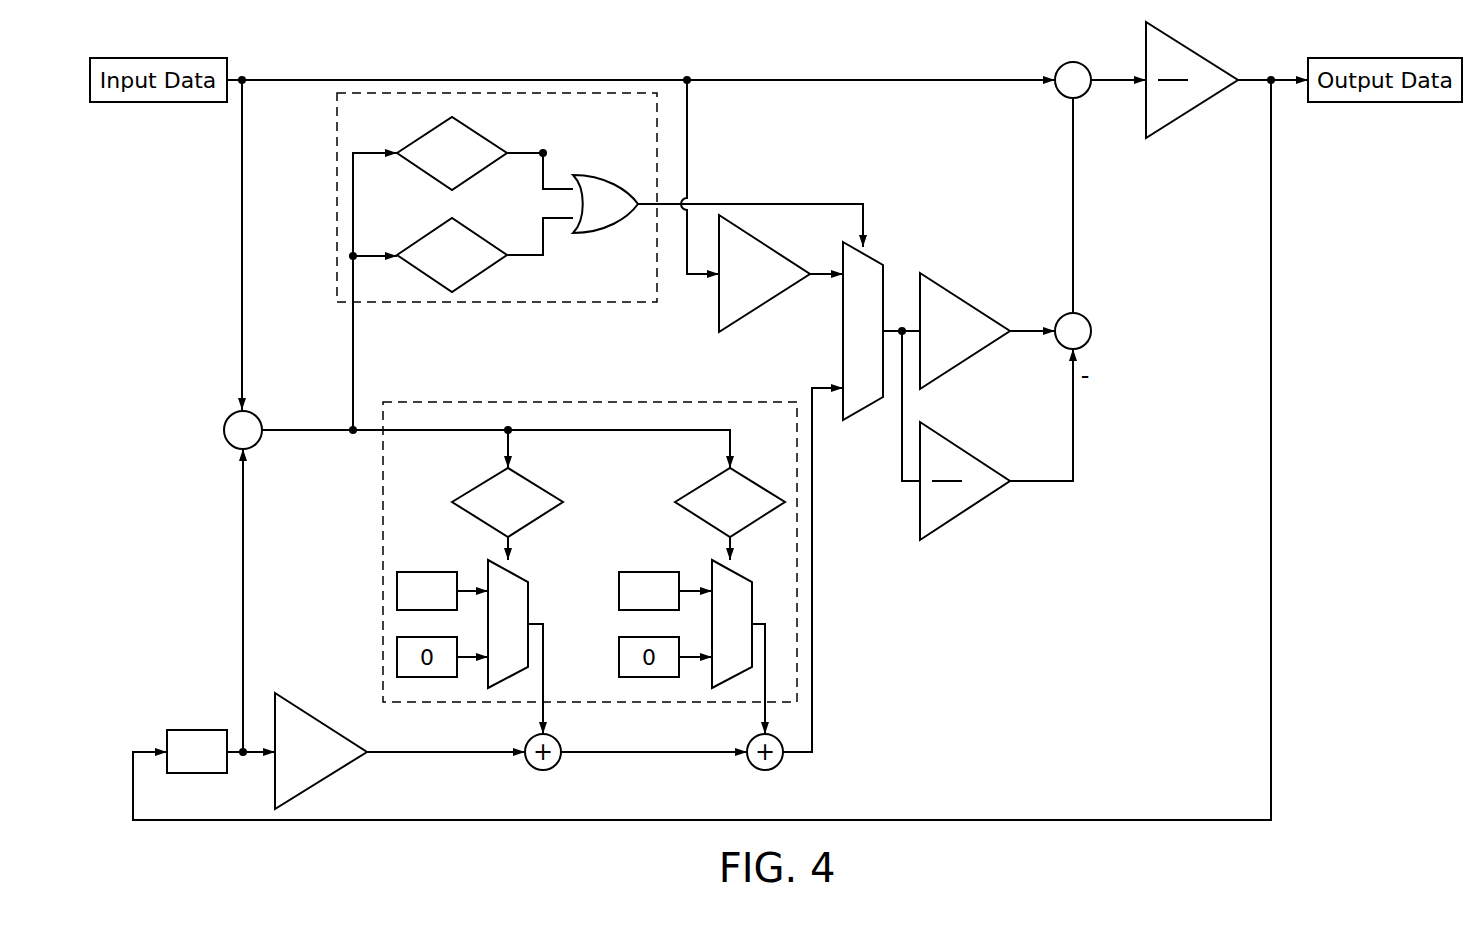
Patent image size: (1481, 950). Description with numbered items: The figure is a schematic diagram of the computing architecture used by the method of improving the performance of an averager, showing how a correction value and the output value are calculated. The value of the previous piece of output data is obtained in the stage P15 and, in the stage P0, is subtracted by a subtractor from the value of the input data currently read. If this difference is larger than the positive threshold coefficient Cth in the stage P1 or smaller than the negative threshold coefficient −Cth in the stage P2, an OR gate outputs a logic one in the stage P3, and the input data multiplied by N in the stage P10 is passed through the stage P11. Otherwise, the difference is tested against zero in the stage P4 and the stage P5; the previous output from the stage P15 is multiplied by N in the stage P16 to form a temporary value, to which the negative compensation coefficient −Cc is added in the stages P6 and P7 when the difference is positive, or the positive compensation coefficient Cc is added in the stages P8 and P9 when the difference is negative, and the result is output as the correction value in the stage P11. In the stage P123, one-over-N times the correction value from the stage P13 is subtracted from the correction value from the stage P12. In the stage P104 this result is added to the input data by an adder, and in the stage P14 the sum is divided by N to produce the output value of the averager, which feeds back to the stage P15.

The stage P0 is at (224, 430).
The stage P1 is at (432, 140).
The stage P2 is at (432, 242).
The stage P3 is at (603, 175).
The stage P4 is at (491, 489).
The stage P5 is at (714, 489).
The stage P6 is at (397, 591).
The stage P7 is at (528, 592).
The stage P8 is at (619, 591).
The stage P9 is at (752, 600).
The stage P10 is at (767, 305).
The stage P11 is at (883, 277).
The stage P12 is at (968, 297).
The stage P13 is at (968, 446).
The stage P14 is at (1193, 112).
The stage P15 is at (196, 730).
The stage P16 is at (326, 721).
The stage P104 is at (1060, 95).
The stage P123 is at (1090, 318).